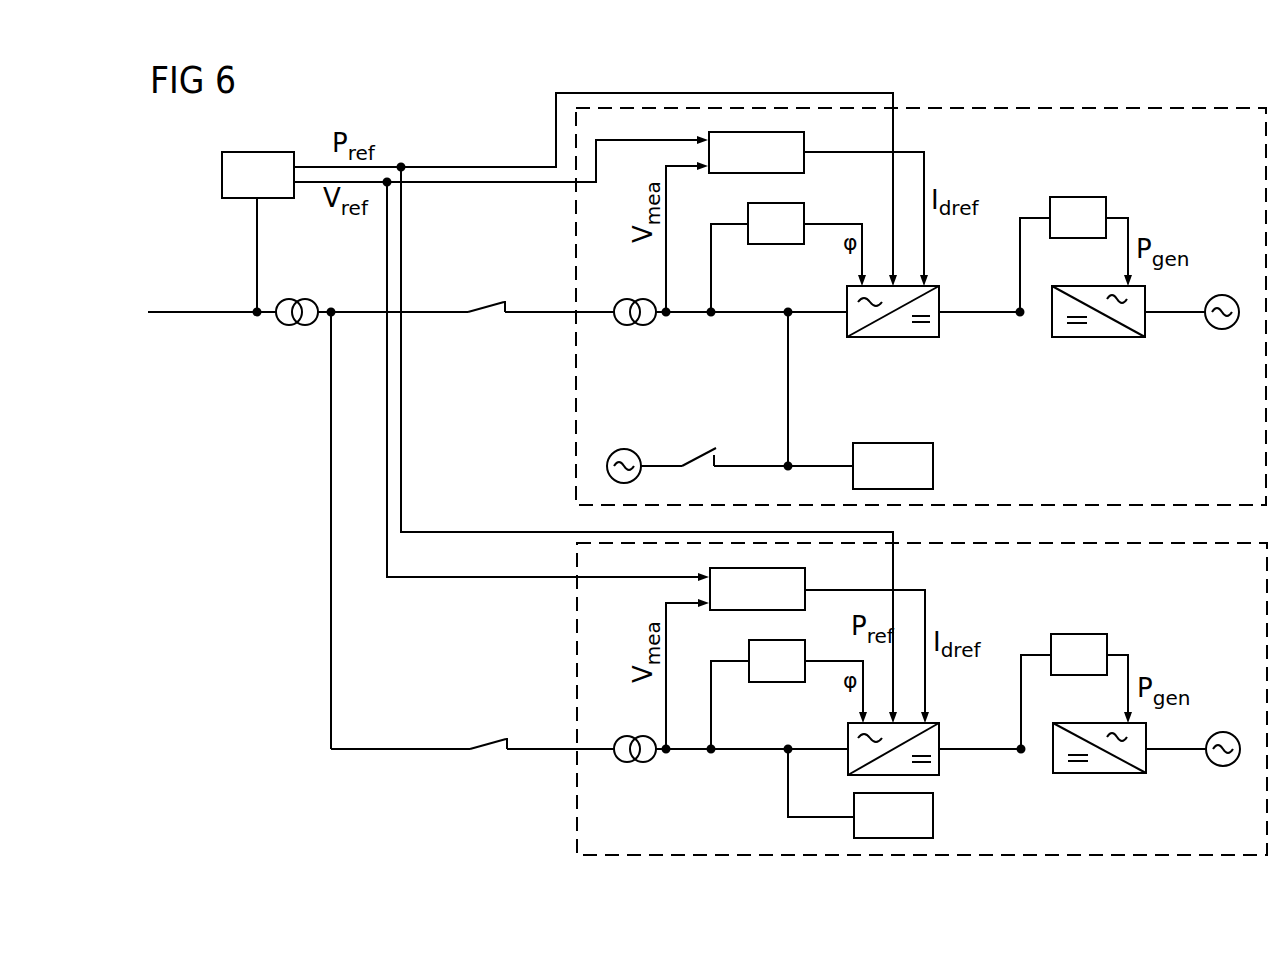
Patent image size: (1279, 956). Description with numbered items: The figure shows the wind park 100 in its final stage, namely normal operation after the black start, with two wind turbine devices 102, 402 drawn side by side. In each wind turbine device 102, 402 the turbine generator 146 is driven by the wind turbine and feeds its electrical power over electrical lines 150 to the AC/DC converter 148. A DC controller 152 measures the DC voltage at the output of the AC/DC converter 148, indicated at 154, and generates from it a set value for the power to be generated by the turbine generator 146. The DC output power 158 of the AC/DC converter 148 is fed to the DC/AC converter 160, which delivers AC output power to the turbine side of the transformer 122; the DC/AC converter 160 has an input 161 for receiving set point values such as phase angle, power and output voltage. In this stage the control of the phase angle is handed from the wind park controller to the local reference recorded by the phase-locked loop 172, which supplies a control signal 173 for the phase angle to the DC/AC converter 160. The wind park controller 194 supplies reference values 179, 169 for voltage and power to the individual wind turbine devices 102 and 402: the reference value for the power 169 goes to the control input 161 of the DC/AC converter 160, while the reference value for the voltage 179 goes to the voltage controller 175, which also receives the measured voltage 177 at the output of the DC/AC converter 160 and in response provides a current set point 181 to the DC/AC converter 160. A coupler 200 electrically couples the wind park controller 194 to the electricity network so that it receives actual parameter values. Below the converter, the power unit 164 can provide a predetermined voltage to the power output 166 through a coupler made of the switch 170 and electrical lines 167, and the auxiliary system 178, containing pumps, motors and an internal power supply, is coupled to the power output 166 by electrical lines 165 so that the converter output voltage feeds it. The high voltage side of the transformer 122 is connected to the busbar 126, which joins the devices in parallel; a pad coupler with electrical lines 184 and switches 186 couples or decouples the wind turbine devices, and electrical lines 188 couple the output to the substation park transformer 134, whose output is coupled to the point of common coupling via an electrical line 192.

The wind park 100 is at (521, 118).
The wind turbine device 102 is at (576, 388).
The wind turbine device 402 is at (577, 800).
The transformer 122 is at (628, 328).
The busbar 126 is at (331, 358).
The substation park transformer 134 is at (300, 300).
The turbine generator 146 is at (1222, 292).
The AC/DC converter 148 is at (1105, 340).
The electrical lines 150 is at (1172, 318).
The DC controller 152 is at (1075, 197).
The DC voltage at output of AC/DC converter 154 is at (1022, 276).
The DC output power 158 is at (1000, 308).
The DC/AC converter 160 is at (940, 328).
The input of converter 161 is at (935, 282).
The power unit 164 is at (622, 448).
The electrical lines 165 is at (818, 462).
The power output 166 is at (847, 314).
The electrical lines 167 is at (745, 462).
The reference value for power 169 is at (437, 165).
The switch 170 is at (690, 455).
The phase-locked loop 172 is at (748, 208).
The control signal for phase angle 173 is at (855, 255).
The voltage controller 175 is at (805, 142).
The measured voltage 177 is at (666, 283).
The auxiliary system 178 is at (933, 466).
The reference value for voltage 179 is at (431, 186).
The current set point 181 is at (925, 172).
The electrical lines 184 is at (550, 308).
The switches 186 is at (492, 304).
The electrical lines 188 is at (353, 308).
The electrical line 192 is at (215, 318).
The wind park controller 194 is at (222, 172).
The coupler 200 is at (257, 257).